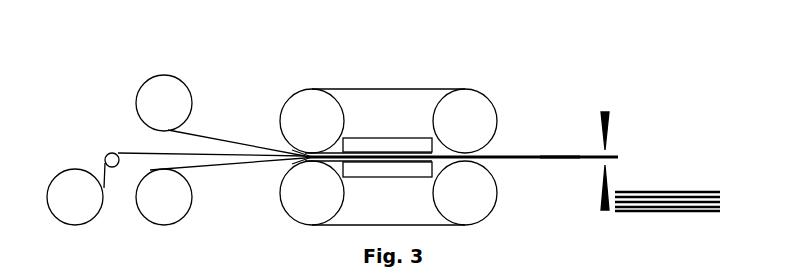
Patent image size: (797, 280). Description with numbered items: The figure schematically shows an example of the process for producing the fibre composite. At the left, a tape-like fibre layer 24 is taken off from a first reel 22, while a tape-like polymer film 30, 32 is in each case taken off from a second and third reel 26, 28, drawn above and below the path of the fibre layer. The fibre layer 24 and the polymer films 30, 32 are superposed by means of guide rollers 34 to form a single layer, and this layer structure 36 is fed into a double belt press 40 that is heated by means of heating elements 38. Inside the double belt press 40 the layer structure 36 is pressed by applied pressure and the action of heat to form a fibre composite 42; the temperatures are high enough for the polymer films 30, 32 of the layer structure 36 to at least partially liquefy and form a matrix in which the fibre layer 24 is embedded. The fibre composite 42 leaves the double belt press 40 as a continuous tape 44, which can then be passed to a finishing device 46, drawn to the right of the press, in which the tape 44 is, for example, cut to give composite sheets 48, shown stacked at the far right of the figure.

The first reel 22 is at (84, 206).
The fibre layer 24 is at (137, 152).
The second reel 26 is at (173, 112).
The third reel 28 is at (173, 206).
The polymer film 30 is at (200, 137).
The polymer film 32 is at (213, 168).
The guide rollers 34 is at (113, 170).
The layer structure 36 is at (287, 147).
The heating elements 38 is at (378, 146).
The double belt press 40 is at (390, 73).
The fibre composite 42 is at (523, 156).
The continuous tape 44 is at (555, 163).
The finishing device 46 is at (607, 97).
The composite sheets 48 is at (712, 192).